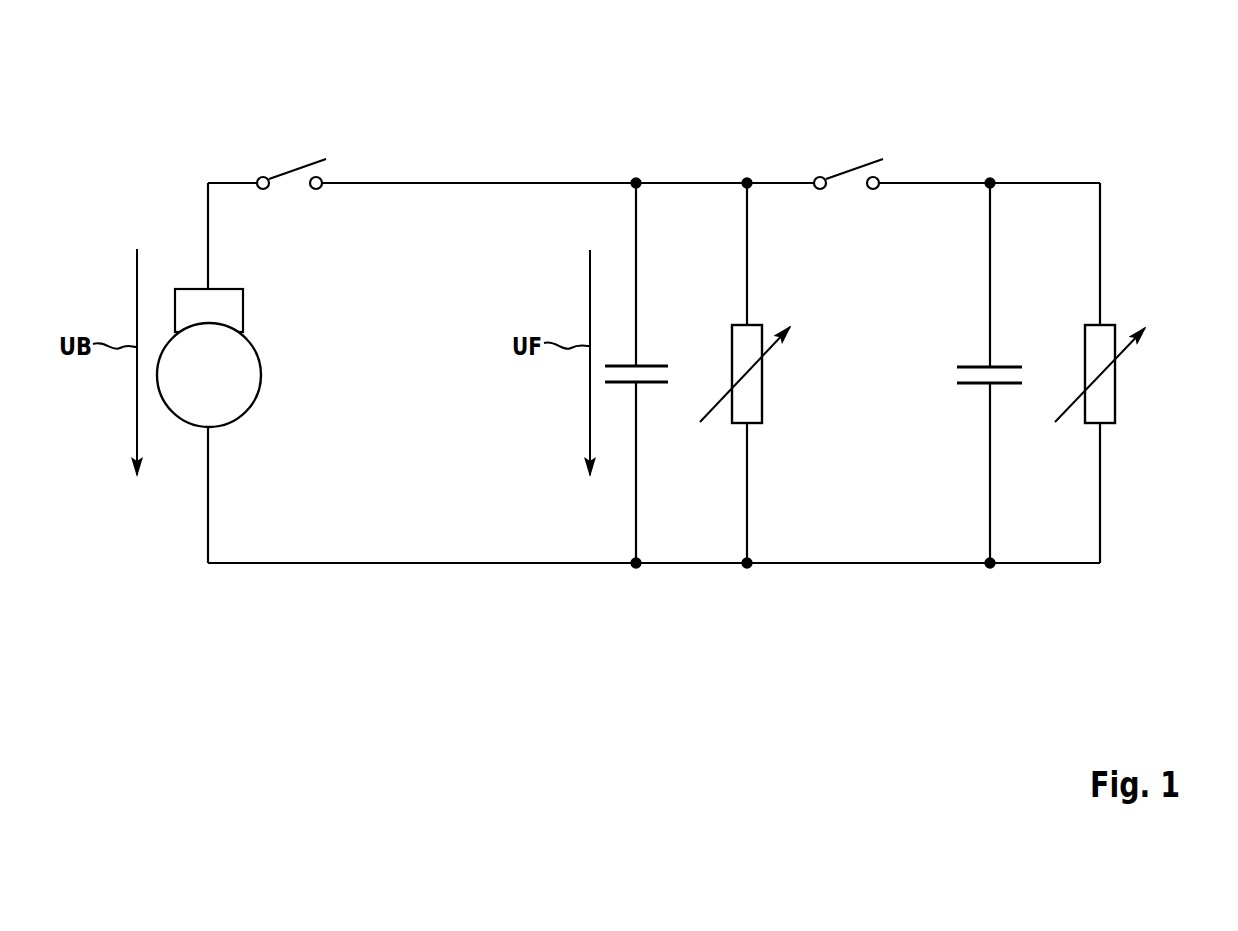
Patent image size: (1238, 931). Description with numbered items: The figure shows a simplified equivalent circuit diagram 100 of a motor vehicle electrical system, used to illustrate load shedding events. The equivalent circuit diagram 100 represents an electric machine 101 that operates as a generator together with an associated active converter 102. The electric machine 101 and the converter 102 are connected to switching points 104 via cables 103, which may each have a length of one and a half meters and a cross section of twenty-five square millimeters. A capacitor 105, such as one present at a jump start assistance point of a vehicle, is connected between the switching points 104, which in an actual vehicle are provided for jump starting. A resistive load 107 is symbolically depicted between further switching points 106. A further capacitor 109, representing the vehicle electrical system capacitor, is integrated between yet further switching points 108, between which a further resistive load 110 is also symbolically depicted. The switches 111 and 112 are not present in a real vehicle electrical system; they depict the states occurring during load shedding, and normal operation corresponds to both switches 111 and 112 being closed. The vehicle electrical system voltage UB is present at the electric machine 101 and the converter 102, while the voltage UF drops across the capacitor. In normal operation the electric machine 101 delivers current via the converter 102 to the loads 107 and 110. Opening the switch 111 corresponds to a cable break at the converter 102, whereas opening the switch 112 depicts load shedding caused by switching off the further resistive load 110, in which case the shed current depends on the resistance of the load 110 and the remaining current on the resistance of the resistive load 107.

The equivalent circuit diagram 100 is at (1058, 625).
The electric machine 101 is at (261, 375).
The active converter 102 is at (243, 310).
The cables 103 is at (473, 182).
The switching points 104 is at (636, 180).
The capacitor 105 is at (643, 358).
The further switching points 106 is at (747, 180).
The resistive load 107 is at (773, 402).
The yet further switching points 108 is at (990, 180).
The further capacitor 109 is at (978, 360).
The further resistive load 110 is at (1116, 387).
The switch 111 is at (296, 170).
The switch 112 is at (853, 170).